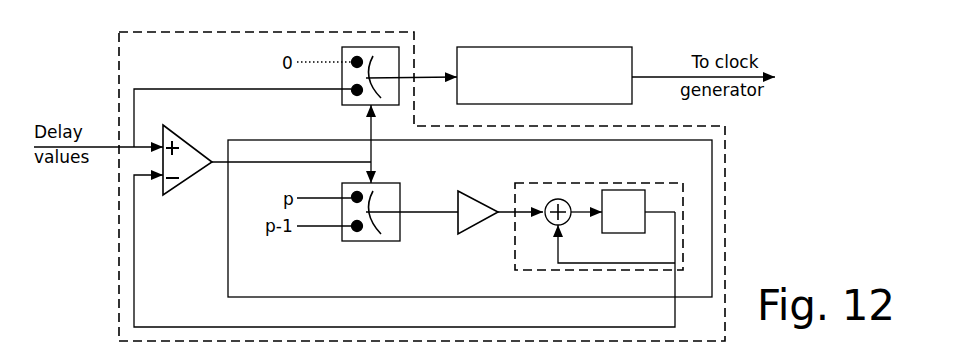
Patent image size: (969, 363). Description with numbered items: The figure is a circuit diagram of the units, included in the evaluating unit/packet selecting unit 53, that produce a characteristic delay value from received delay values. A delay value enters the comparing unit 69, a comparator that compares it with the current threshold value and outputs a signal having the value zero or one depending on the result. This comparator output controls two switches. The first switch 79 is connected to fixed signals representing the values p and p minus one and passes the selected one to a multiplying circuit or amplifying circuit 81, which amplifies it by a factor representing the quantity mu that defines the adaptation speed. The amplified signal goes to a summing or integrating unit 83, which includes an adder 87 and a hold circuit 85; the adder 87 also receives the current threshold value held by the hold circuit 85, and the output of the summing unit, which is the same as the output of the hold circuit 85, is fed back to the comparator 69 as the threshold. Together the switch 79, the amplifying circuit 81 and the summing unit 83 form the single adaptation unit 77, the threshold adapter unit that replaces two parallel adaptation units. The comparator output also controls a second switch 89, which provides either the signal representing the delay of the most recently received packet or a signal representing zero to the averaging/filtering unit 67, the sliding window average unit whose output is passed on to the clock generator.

The evaluating unit/packet selecting unit 53 is at (720, 200).
The averaging/filtering unit 67 is at (636, 97).
The comparing unit 69 is at (184, 151).
The single adaptation unit 77 is at (705, 263).
The switch 79 is at (372, 238).
The multiplying circuit or amplifying circuit 81 is at (478, 197).
The summing or integrating unit 83 is at (661, 181).
The hold circuit 85 is at (630, 227).
The adder 87 is at (553, 198).
The second switch 89 is at (345, 93).